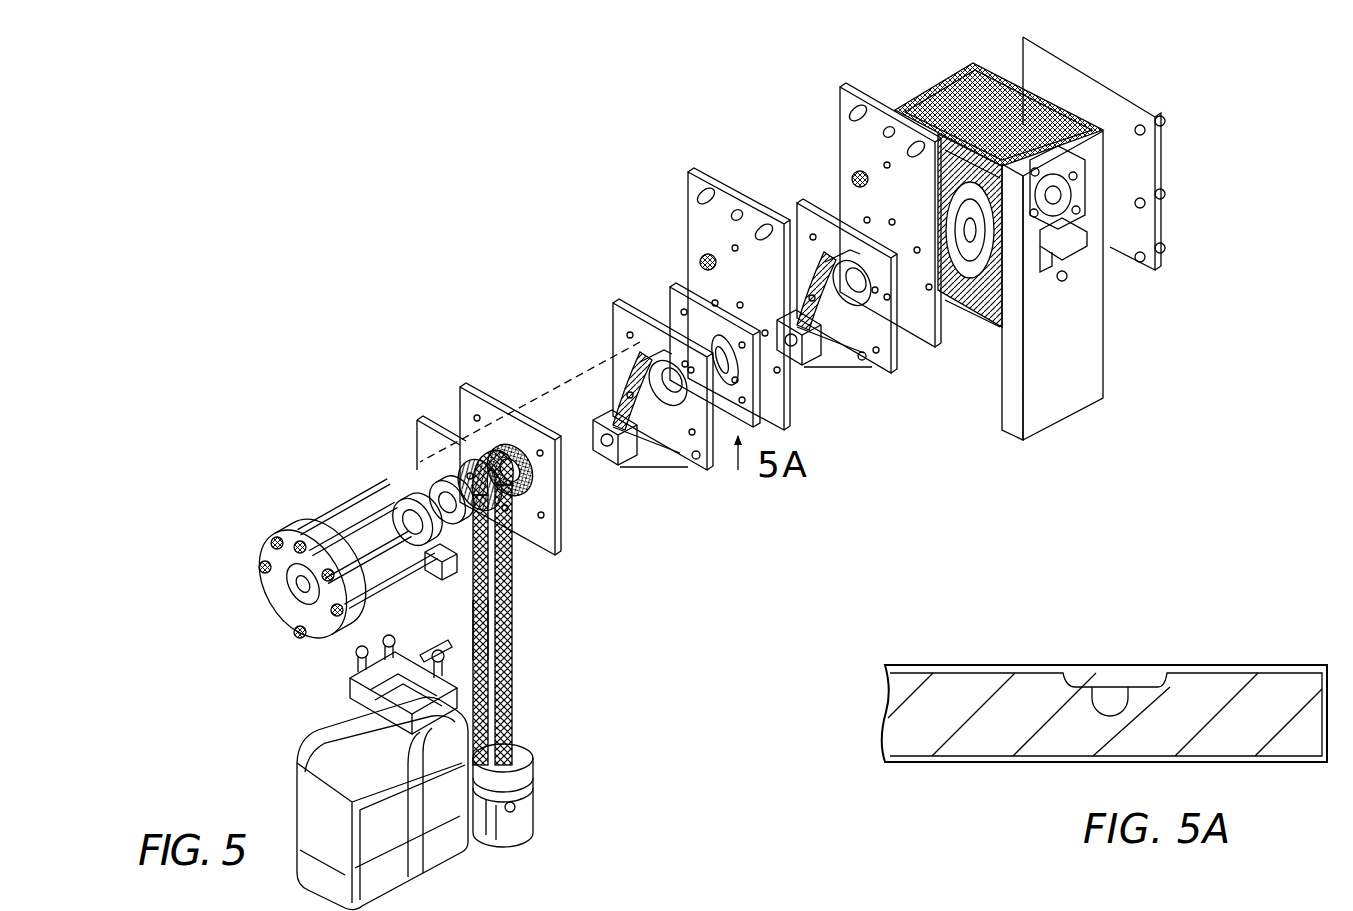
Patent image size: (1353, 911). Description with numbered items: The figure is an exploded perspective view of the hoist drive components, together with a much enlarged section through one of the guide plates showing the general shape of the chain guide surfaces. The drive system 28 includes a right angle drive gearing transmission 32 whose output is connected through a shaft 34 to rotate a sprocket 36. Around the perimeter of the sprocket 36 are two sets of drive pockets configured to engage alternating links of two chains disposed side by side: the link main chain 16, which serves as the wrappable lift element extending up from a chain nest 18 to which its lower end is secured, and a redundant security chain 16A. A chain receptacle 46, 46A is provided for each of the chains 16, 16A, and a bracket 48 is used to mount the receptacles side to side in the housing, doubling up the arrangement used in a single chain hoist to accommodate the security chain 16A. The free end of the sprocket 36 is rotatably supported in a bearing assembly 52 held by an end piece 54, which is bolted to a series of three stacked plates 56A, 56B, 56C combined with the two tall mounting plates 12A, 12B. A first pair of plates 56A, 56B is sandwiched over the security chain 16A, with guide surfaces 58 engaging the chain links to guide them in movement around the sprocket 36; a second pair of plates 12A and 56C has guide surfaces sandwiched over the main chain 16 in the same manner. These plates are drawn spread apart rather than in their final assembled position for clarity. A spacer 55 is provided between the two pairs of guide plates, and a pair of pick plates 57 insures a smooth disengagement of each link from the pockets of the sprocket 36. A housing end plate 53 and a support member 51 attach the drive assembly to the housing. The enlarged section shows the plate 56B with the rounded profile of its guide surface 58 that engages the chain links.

In FIG. 5, the mounting plate 12A is at (702, 164).
In FIG. 5, the mounting plate 12B is at (840, 100).
In FIG. 5, the main chain 16 is at (515, 638).
In FIG. 5, the security chain 16A is at (476, 636).
In FIG. 5, the chain nest 18 is at (537, 800).
In FIG. 5, the drive system 28 is at (446, 287).
In FIG. 5, the transmission 32 is at (926, 85).
In FIG. 5, the shaft 34 is at (583, 398).
In FIG. 5, the sprocket 36 is at (472, 470).
In FIG. 5, the chain receptacle 46 is at (424, 804).
In FIG. 5, the chain receptacle 46A is at (385, 877).
In FIG. 5, the bracket 48 is at (352, 678).
In FIG. 5, the support member 51 is at (1087, 357).
In FIG. 5, the bearing assembly 52 is at (422, 483).
In FIG. 5, the housing end plate 53 is at (1140, 163).
In FIG. 5, the end piece 54 is at (298, 521).
In FIG. 5, the spacer 55 is at (670, 290).
In FIG. 5, the guide plate 56A is at (415, 418).
In FIG. 5, the guide plate 56B is at (613, 320).
In FIG. 5A, the guide plate 56B is at (1228, 665).
In FIG. 5, the guide plate 56C is at (847, 286).
In FIG. 5, the pick plate 57 is at (627, 458).
In FIG. 5, the guide surface 58 is at (694, 460).
In FIG. 5A, the guide surface 58 is at (1098, 680).